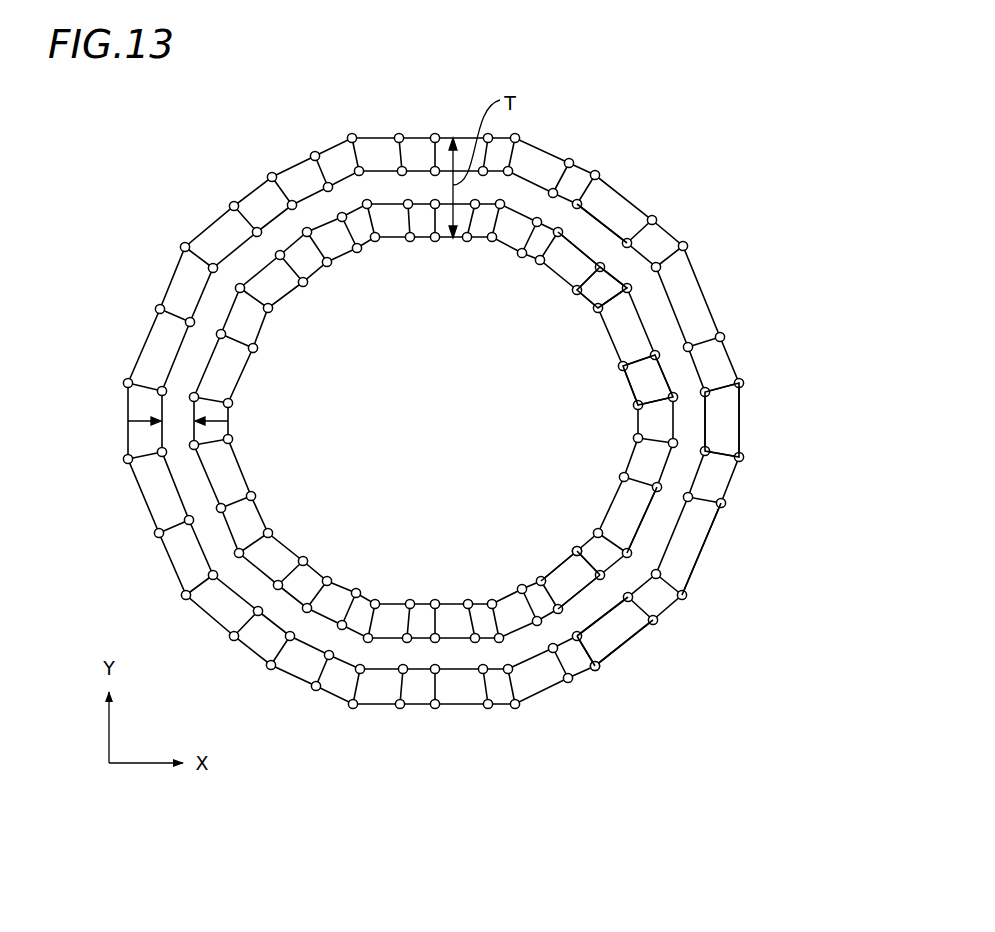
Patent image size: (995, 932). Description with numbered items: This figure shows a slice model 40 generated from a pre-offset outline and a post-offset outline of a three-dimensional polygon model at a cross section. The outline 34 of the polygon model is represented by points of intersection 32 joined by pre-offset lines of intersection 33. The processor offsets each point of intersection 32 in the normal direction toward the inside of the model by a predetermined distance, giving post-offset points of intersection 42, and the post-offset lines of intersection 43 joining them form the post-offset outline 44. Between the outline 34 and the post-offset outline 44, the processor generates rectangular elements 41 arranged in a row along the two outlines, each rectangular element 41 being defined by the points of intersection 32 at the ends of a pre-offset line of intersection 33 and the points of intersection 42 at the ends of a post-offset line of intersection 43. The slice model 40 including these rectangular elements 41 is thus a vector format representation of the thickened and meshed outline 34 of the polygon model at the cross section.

The slice model 40 is at (602, 123).
The rectangular element 41 is at (603, 287).
The post-offset outline 44 is at (588, 253).
The outline 34 is at (622, 495).
The pre-offset line of intersection 33 is at (562, 563).
The point of intersection 32 is at (576, 565).
The post-offset point of intersection 42 is at (600, 565).
The post-offset line of intersection 43 is at (615, 605).